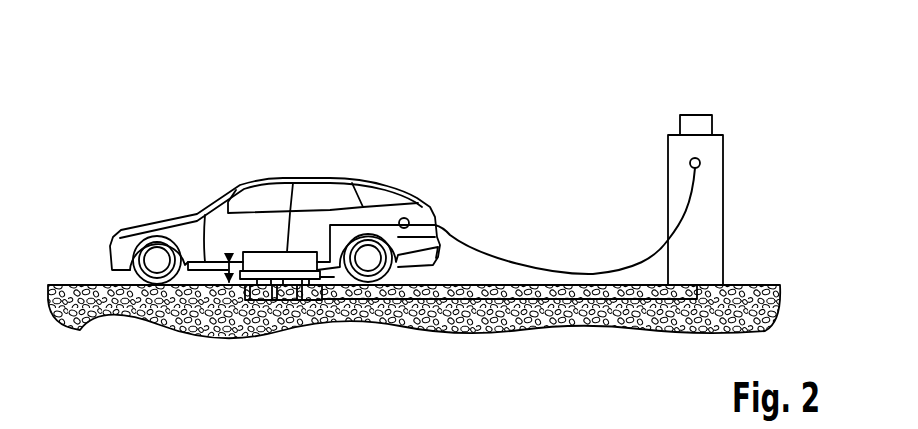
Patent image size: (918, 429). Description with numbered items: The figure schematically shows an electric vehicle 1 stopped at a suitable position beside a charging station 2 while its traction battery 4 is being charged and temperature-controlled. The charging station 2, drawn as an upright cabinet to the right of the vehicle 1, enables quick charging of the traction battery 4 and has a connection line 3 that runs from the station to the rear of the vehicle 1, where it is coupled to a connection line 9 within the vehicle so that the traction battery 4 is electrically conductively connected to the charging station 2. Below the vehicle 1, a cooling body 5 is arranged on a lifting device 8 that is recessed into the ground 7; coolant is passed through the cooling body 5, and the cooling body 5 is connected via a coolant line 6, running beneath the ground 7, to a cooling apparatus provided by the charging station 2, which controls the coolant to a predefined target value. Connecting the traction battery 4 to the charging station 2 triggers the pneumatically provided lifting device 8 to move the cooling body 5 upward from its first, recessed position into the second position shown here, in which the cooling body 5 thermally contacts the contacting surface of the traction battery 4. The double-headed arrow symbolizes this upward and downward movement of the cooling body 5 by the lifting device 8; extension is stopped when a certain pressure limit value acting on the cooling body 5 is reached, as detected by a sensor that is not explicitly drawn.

The electric vehicle 1 is at (190, 180).
The charging station 2 is at (724, 197).
The connection line 3 is at (645, 254).
The traction battery 4 is at (270, 261).
The cooling body 5 is at (272, 278).
The coolant line 6 is at (662, 300).
The ground 7 is at (78, 284).
The lifting device 8 is at (323, 296).
The connection line 9 is at (396, 218).